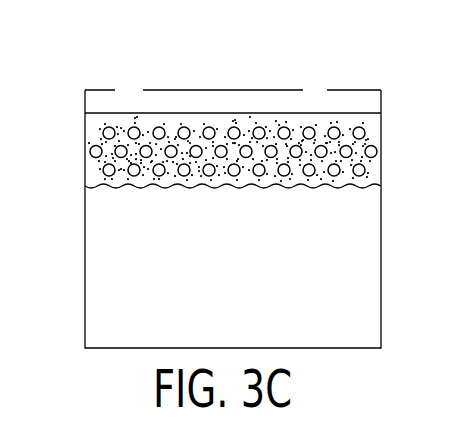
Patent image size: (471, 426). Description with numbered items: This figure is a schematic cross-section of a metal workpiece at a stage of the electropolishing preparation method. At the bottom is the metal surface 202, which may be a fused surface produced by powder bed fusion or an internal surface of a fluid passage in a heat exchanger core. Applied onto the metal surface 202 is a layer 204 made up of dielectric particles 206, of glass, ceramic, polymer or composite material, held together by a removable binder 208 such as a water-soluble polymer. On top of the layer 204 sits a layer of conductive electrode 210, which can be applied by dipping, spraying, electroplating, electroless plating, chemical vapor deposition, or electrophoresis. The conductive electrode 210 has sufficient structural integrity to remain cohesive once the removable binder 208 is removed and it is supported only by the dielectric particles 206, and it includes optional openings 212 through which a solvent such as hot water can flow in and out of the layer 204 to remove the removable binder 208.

The metal surface 202 is at (135, 188).
The layer 204 is at (229, 154).
The dielectric particles 206 is at (104, 174).
The removable binder 208 is at (98, 141).
The conductive electrode 210 is at (375, 100).
The openings 212 is at (130, 90).